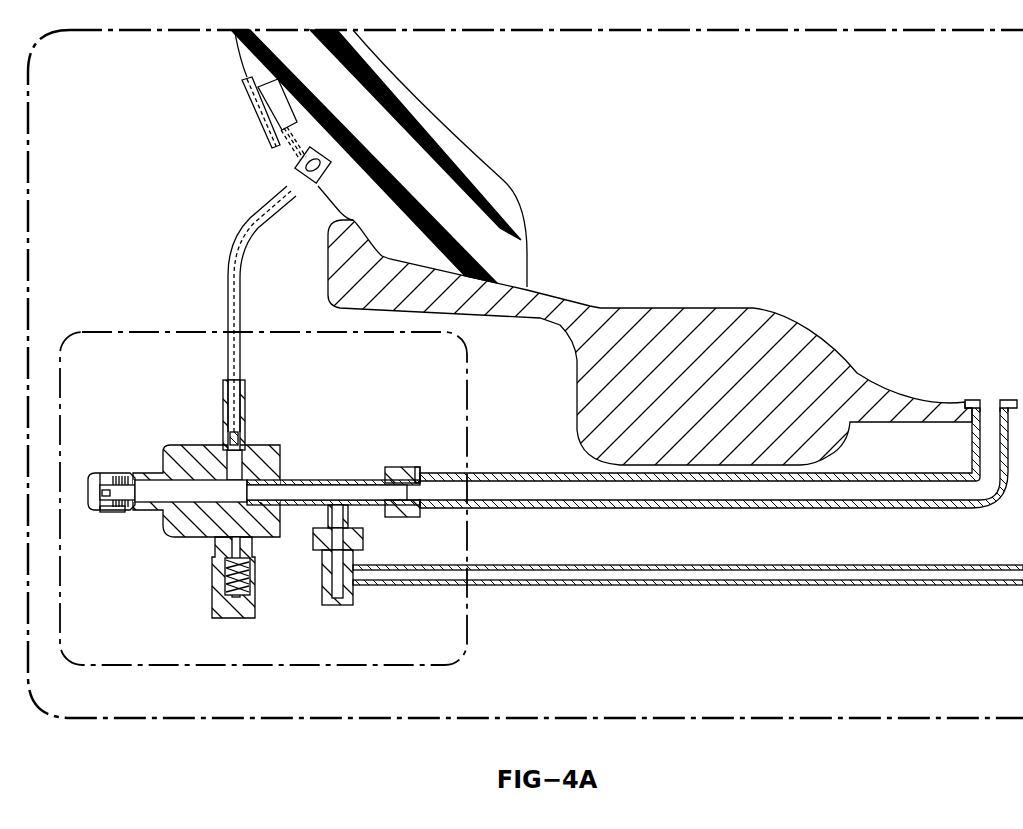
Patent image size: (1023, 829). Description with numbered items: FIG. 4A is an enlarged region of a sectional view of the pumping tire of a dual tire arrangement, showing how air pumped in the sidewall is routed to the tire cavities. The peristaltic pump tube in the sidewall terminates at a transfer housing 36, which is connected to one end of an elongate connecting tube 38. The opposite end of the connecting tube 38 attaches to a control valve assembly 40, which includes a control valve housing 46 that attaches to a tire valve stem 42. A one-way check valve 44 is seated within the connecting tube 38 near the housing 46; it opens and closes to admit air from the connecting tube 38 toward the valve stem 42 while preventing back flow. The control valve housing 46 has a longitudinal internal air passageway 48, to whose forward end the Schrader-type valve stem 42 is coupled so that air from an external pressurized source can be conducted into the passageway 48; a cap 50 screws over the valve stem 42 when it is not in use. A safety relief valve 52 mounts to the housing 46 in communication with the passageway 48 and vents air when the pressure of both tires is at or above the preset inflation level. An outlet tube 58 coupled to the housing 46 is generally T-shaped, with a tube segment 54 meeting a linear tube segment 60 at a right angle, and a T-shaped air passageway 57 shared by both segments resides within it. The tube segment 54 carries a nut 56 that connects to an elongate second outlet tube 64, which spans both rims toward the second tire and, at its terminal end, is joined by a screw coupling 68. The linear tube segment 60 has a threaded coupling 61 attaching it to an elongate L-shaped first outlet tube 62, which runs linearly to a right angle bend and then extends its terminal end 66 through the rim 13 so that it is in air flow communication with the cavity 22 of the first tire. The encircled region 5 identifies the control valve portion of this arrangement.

The fitting assembly 5 is at (472, 644).
The rim 13 is at (680, 325).
The cavity 22 is at (812, 112).
The transfer housing 36 is at (302, 165).
The connecting tube 38 is at (230, 260).
The control valve assembly 40 is at (165, 532).
The tire valve stem 42 is at (137, 490).
The one-way check valve 44 is at (225, 385).
The control valve housing 46 is at (197, 532).
The air passageway 48 is at (232, 492).
The cap 50 is at (115, 512).
The safety relief valve 52 is at (240, 619).
The tube segment 54 is at (328, 512).
The nut 56 is at (360, 540).
The T-shaped air passageway 57 is at (323, 488).
The outlet tube 58 is at (305, 478).
The linear tube segment 60 is at (360, 483).
The threaded coupling 61 is at (418, 468).
The first outlet tube 62 is at (530, 506).
The second outlet tube 64 is at (720, 586).
The terminal end 66 is at (983, 405).
The screw coupling 68 is at (345, 606).